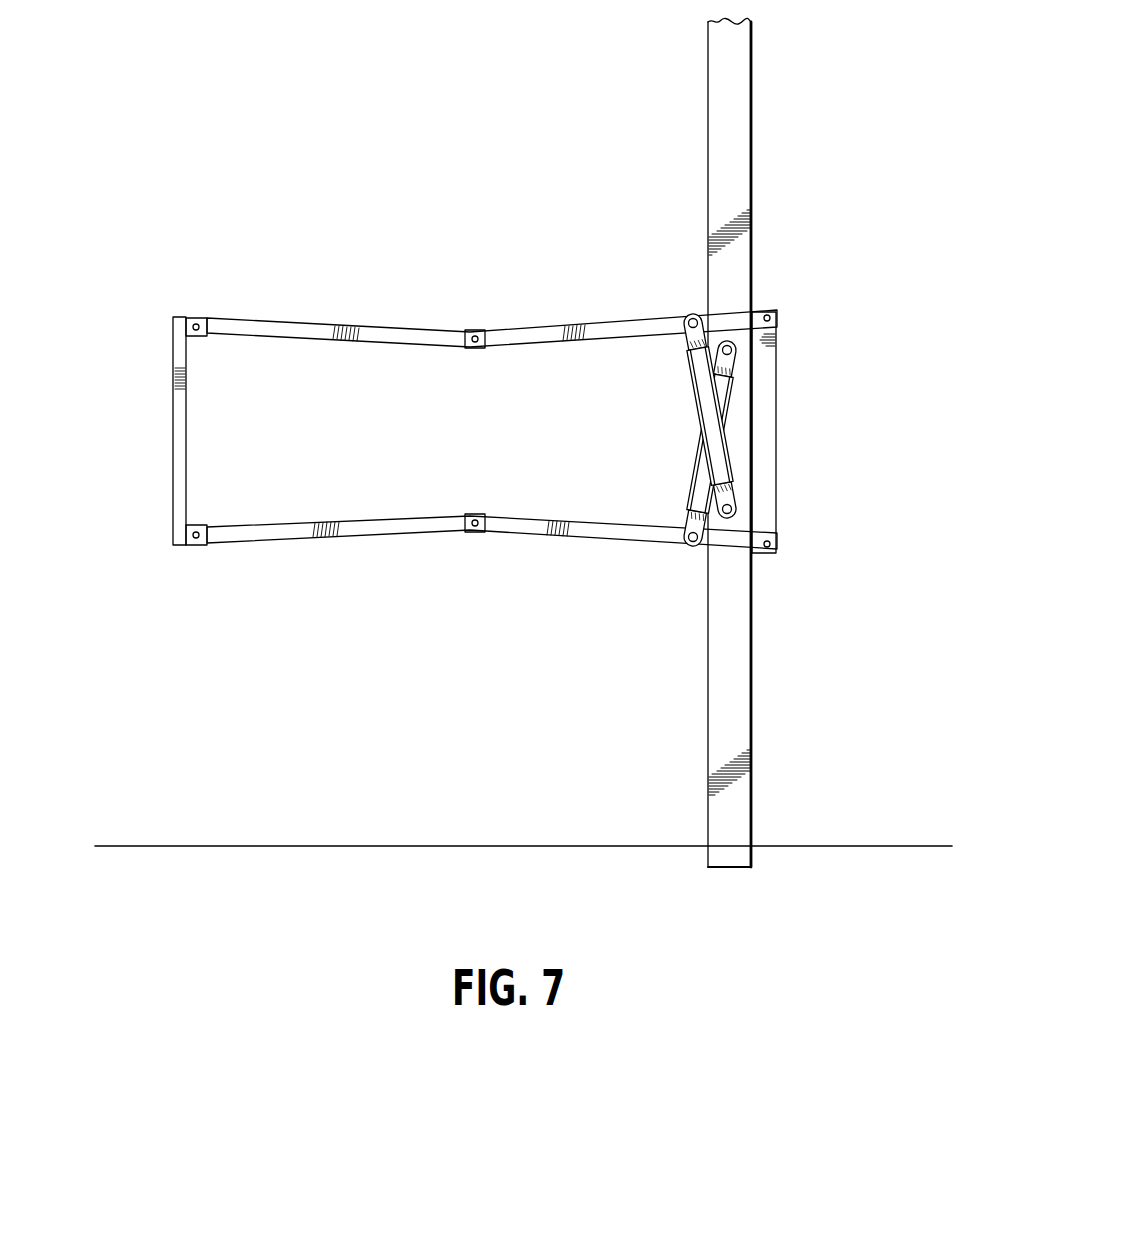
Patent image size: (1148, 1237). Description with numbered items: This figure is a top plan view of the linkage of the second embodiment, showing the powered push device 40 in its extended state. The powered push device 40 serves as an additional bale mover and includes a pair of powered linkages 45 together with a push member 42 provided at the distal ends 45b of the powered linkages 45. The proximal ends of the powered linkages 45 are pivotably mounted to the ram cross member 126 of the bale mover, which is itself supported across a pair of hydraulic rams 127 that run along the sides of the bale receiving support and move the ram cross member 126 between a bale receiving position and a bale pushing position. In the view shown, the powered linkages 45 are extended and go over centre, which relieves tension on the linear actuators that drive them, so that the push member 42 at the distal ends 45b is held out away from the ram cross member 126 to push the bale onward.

The powered push device 40 is at (435, 397).
The push member 42 is at (178, 410).
The powered linkages 45 is at (385, 331).
The distal ends 45b is at (184, 318).
The ram cross member 126 is at (715, 740).
The hydraulic rams 127 is at (800, 846).